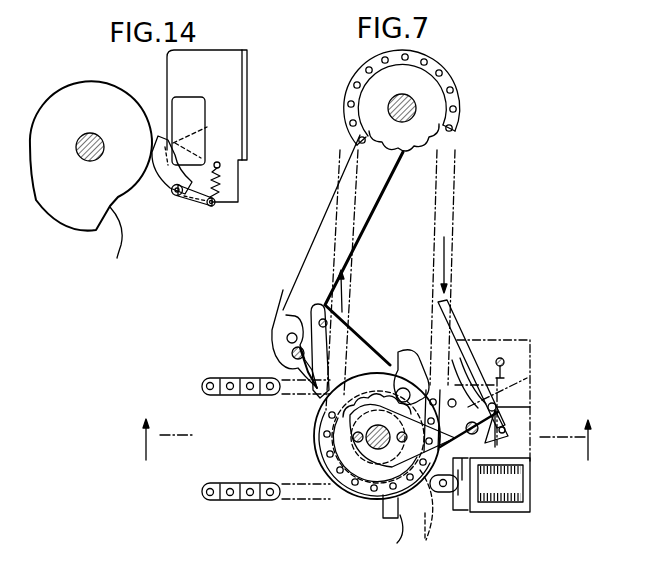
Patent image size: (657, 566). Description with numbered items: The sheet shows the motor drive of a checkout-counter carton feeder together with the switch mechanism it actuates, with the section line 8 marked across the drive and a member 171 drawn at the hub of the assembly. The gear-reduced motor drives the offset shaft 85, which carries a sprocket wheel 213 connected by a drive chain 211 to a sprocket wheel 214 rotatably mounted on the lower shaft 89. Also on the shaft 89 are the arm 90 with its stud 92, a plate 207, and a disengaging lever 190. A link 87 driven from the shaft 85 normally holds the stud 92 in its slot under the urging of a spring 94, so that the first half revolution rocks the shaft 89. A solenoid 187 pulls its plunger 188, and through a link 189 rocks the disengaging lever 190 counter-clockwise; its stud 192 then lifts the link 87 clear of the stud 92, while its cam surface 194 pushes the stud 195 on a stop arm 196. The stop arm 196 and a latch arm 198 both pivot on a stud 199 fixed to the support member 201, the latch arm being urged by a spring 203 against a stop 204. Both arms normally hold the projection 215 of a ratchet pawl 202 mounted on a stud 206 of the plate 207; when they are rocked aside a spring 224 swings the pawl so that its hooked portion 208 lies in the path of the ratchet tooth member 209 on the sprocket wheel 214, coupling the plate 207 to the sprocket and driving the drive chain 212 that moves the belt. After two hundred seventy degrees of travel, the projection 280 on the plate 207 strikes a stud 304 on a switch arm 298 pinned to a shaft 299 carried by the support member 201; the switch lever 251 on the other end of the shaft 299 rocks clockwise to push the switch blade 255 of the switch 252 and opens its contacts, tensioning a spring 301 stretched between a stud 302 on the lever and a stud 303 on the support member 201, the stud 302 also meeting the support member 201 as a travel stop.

In FIG. 7, the section line 8- 8 is at (367, 429).
In FIG. 7, the offset shaft 85 is at (408, 96).
In FIG. 7, the link 87 is at (306, 256).
In FIG. 14, the shaft 89 is at (77, 147).
In FIG. 7, the shaft 89 is at (348, 490).
In FIG. 7, the arm 90 is at (304, 388).
In FIG. 7, the stud 92 is at (291, 353).
In FIG. 7, the spring 94 is at (280, 326).
In FIG. 7, the lever plate 171 is at (316, 426).
In FIG. 7, the solenoid 187 is at (528, 490).
In FIG. 7, the plunger 188 is at (460, 510).
In FIG. 7, the link 189 is at (432, 500).
In FIG. 7, the disengaging lever 190 is at (396, 328).
In FIG. 7, the stud 192 is at (334, 316).
In FIG. 7, the cam surface 194 is at (524, 386).
In FIG. 7, the stud 195 is at (455, 370).
In FIG. 7, the stop arm 196 is at (462, 394).
In FIG. 7, the latch arm 198 is at (430, 352).
In FIG. 7, the stud 199 is at (500, 445).
In FIG. 14, the support member 201 is at (250, 90).
In FIG. 7, the support member 201 is at (533, 393).
In FIG. 7, the ratchet pawl 202 is at (400, 372).
In FIG. 7, the spring 203 is at (505, 370).
In FIG. 7, the stop 204 is at (530, 407).
In FIG. 7, the stud 206 is at (406, 348).
In FIG. 14, the plate 207 is at (77, 97).
In FIG. 7, the plate 207 is at (317, 468).
In FIG. 7, the hooked portion 208 is at (373, 500).
In FIG. 7, the ratchet tooth member 209 is at (323, 447).
In FIG. 7, the drive chain 211 is at (455, 196).
In FIG. 7, the drive chain 212 is at (216, 377).
In FIG. 7, the sprocket wheel 213 is at (444, 143).
In FIG. 7, the sprocket wheel 214 is at (344, 342).
In FIG. 7, the projection 215 is at (432, 360).
In FIG. 7, the spring 224 is at (426, 522).
In FIG. 14, the switch lever 251 is at (194, 208).
In FIG. 14, the switch 252 is at (190, 104).
In FIG. 14, the switch blade 255 is at (166, 134).
In FIG. 14, the projection 280 is at (103, 239).
In FIG. 7, the projection 280 is at (385, 536).
In FIG. 14, the switch arm 298 is at (204, 150).
In FIG. 14, the shaft 299 is at (174, 197).
In FIG. 14, the spring 301 is at (222, 190).
In FIG. 14, the stud 302 is at (215, 205).
In FIG. 14, the stud 303 is at (221, 166).
In FIG. 14, the stud 304 is at (207, 127).